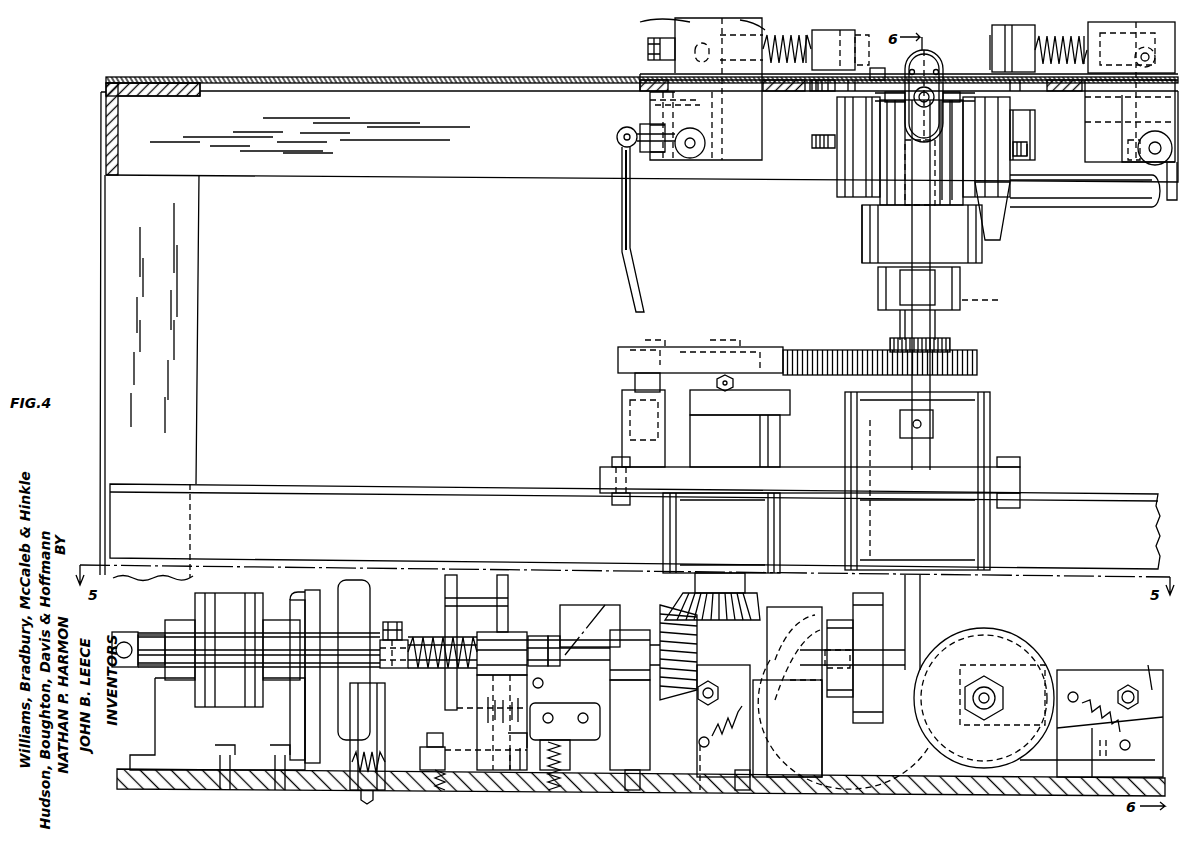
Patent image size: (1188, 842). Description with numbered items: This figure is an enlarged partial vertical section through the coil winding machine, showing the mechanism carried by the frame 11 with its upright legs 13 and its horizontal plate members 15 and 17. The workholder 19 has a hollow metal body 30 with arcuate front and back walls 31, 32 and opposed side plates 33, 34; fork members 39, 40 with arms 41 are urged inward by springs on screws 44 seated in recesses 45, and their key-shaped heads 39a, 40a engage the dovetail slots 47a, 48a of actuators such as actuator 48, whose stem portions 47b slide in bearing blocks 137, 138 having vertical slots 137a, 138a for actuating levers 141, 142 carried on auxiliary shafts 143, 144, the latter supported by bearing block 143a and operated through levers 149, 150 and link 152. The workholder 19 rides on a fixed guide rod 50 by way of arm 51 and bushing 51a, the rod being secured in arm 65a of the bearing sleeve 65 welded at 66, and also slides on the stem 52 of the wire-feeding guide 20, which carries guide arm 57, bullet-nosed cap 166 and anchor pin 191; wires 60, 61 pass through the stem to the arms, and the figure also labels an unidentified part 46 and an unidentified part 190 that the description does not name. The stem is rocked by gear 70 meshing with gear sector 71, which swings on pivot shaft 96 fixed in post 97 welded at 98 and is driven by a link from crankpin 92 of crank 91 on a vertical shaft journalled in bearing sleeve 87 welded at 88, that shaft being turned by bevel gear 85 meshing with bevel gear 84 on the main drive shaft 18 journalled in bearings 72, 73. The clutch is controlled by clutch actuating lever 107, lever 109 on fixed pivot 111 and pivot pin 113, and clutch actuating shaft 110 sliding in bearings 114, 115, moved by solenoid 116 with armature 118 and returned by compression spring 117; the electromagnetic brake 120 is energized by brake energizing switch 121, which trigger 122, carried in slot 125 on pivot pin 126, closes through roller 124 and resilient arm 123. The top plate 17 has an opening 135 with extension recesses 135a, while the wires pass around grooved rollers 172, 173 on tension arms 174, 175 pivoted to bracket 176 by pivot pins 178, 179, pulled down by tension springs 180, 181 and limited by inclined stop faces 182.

The frame 11 is at (230, 473).
The upright legs 13 is at (100, 346).
The plate member 15 is at (952, 780).
The plate member 17 is at (645, 82).
The main drive shaft 18 is at (527, 640).
The workholder 19 is at (854, 226).
The wire-feeding guide 20 is at (930, 56).
The hollow metal body 30 is at (872, 240).
The front wall 31 is at (1000, 130).
The back wall 32 is at (1021, 135).
The side plate 33 is at (1002, 218).
The side plate 34 is at (878, 195).
The fork member 39 is at (1012, 162).
The key-shaped head 39a is at (1027, 148).
The fork member 40 is at (837, 125).
The key-shaped head 40a is at (860, 162).
The arm 41 is at (1015, 34).
The screws 44 is at (812, 140).
The recesses 45 is at (780, 38).
The cross plate 46 is at (1020, 476).
The dovetail slot 47a is at (991, 44).
The stem portion 47b is at (806, 36).
The actuator 48 is at (832, 31).
The dovetail slot 48a is at (862, 35).
The guide rod 50 is at (935, 245).
The arm 51 is at (945, 285).
The bushing 51a is at (996, 301).
The stem 52 is at (937, 320).
The guide arm 57 is at (908, 152).
The wire 60 is at (941, 78).
The wire 61 is at (896, 92).
The bearing sleeve 65 is at (985, 420).
The arm 65a is at (935, 420).
The welding 66 is at (985, 460).
The gear 70 is at (950, 345).
The gear sector 71 is at (825, 352).
The bearing 72 is at (790, 608).
The bearing 73 is at (580, 605).
The bevel gear 84 is at (683, 635).
The bevel gear 85 is at (757, 600).
The bearing sleeve 87 is at (780, 440).
The welding 88 is at (780, 466).
The crank 91 is at (790, 397).
The crankpin 92 is at (745, 347).
The pivot shaft 96 is at (635, 380).
The post 97 is at (622, 412).
The welding 98 is at (615, 458).
The clutch actuating lever 107 is at (368, 576).
The lever 109 is at (308, 702).
The clutch actuating shaft 110 is at (552, 636).
The fixed pivot 111 is at (383, 722).
The pivot pin 113 is at (392, 622).
The bearing 114 is at (490, 632).
The bearing 115 is at (662, 625).
The solenoid 116 is at (228, 580).
The compression spring 117 is at (433, 640).
The armature 118 is at (310, 590).
The electromagnetic brake 120 is at (470, 598).
The brake energizing switch 121 is at (530, 790).
The trigger 122 is at (600, 722).
The resilient arm 123 is at (568, 798).
The roller 124 is at (545, 636).
The slot 125 is at (591, 622).
The pivot pin 126 is at (630, 630).
The opening 135 is at (976, 143).
The extension recesses 135a is at (822, 90).
The bearing block 137 is at (1112, 37).
The vertical slot 137a is at (1133, 54).
The bearing block 138 is at (690, 22).
The vertical slot 138a is at (660, 48).
The actuating lever 141 is at (1128, 98).
The actuating lever 142 is at (655, 104).
The auxiliary shaft 143 is at (1157, 153).
The bearing block 143a is at (1130, 152).
The auxiliary shaft 144 is at (690, 158).
The lever 149 is at (1142, 136).
The lever 150 is at (618, 133).
The link 152 is at (622, 200).
The cap 166 is at (910, 70).
The grooved roller 172 is at (1040, 666).
The grooved roller 173 is at (876, 748).
The tension arm 174 is at (1086, 672).
The tension arm 175 is at (658, 800).
The bracket 176 is at (1100, 752).
The pivot pin 178 is at (1125, 685).
The pivot pin 179 is at (700, 790).
The tension spring 180 is at (1106, 726).
The tension spring 181 is at (740, 792).
The inclined stop faces 182 is at (668, 706).
The pin 190 is at (946, 92).
The anchor pin 191 is at (877, 68).